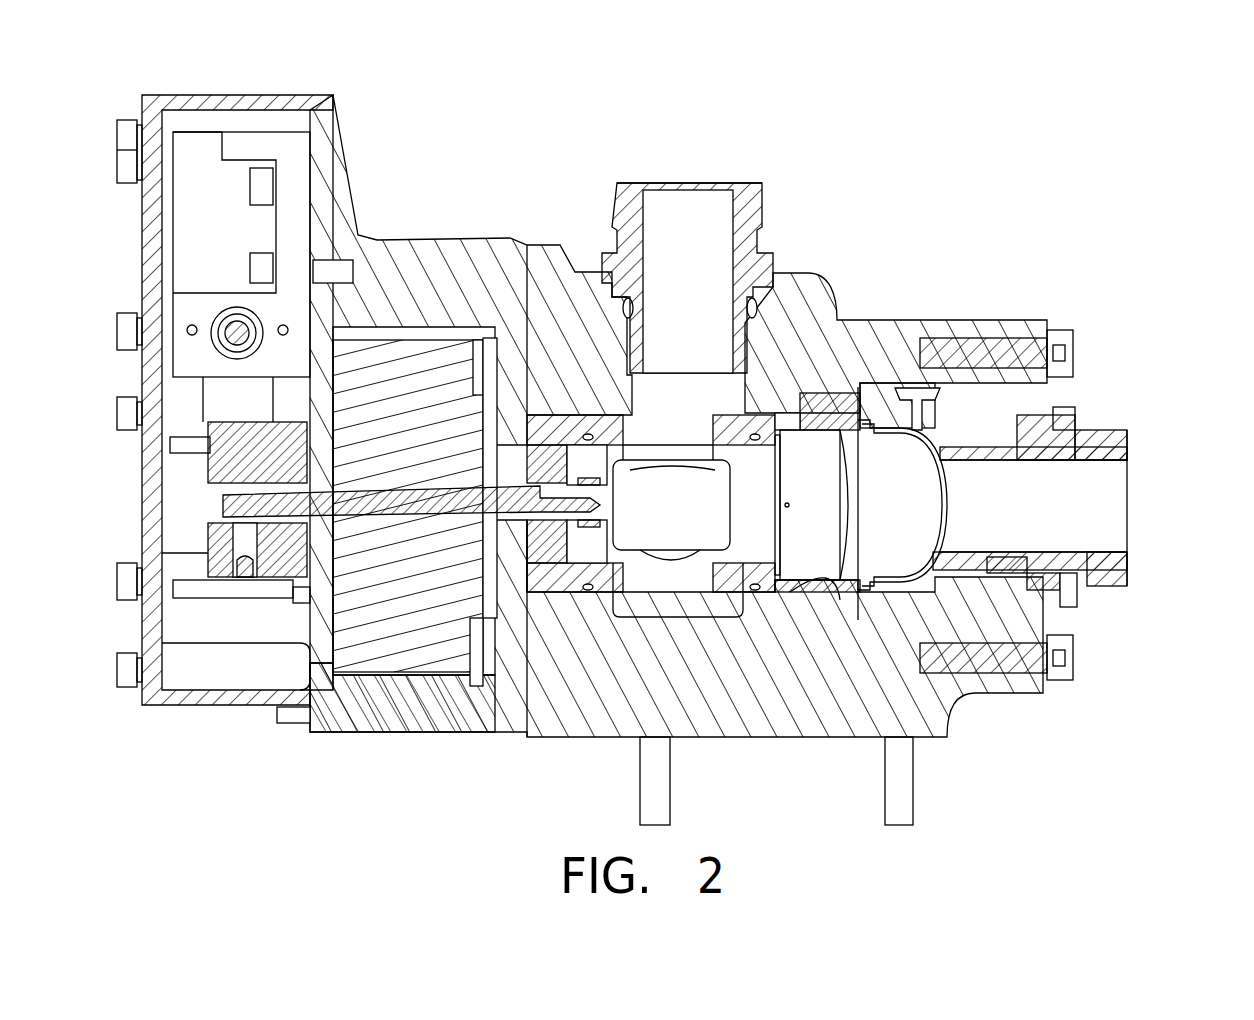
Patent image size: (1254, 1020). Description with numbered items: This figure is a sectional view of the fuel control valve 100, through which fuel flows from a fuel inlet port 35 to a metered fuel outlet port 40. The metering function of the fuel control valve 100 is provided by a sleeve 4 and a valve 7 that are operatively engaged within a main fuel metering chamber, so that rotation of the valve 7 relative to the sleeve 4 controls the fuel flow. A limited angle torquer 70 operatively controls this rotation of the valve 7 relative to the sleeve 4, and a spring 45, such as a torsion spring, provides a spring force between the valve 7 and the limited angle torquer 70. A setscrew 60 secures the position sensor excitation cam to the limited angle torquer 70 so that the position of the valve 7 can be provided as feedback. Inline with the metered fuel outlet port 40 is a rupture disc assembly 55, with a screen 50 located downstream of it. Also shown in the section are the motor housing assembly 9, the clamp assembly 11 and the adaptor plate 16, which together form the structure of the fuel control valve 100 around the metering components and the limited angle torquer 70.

The sleeve 4 is at (765, 445).
The valve 7 is at (672, 565).
The motor housing assembly 9 is at (487, 235).
The clamp assembly 11 is at (258, 92).
The adaptor plate 16 is at (1030, 320).
The fuel inlet port 35 is at (660, 166).
The metered fuel outlet port 40 is at (1145, 503).
The spring 45 is at (605, 540).
The screen 50 is at (947, 500).
The rupture disc assembly 55 is at (838, 600).
The setscrew 60 is at (240, 578).
The limited angle torquer 70 is at (408, 653).
The fuel control valve 100 is at (617, 802).